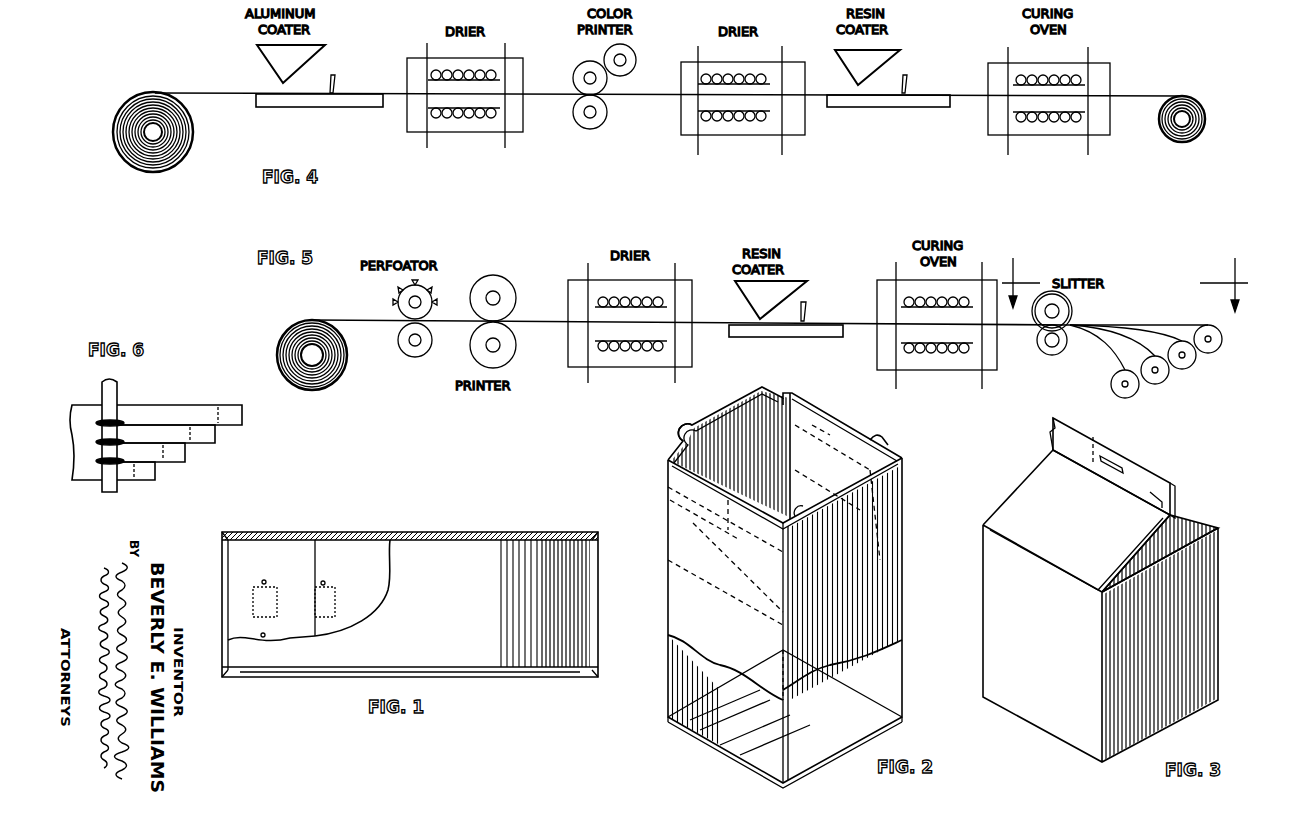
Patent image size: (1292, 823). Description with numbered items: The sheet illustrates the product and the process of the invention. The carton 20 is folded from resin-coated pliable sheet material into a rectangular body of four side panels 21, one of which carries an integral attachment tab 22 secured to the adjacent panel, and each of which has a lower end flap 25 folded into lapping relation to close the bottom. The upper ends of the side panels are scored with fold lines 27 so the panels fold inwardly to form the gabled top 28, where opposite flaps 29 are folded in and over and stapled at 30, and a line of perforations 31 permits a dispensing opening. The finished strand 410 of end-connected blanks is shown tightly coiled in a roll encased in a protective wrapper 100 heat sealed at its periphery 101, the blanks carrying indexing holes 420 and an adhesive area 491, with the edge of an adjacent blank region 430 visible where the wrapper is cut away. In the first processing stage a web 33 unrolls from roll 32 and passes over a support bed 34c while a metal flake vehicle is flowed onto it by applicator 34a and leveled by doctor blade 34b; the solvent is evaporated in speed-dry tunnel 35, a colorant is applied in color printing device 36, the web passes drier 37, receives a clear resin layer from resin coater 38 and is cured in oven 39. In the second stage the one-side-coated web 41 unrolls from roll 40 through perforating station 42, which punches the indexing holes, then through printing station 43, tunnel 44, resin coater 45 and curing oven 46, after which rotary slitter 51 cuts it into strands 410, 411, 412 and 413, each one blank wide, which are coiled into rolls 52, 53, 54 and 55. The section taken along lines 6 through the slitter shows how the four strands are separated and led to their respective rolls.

In FIG. 2, the carton 20 is at (661, 598).
In FIG. 3, the carton 20 is at (983, 594).
In FIG. 2, the side panels 21 is at (664, 656).
In FIG. 3, the side panels 21 is at (1210, 650).
In FIG. 2, the attachment tab 22 is at (805, 686).
In FIG. 2, the lower end flaps 25 is at (720, 744).
In FIG. 2, the fold lines 27 is at (690, 540).
In FIG. 3, the fold lines 27 is at (1076, 572).
In FIG. 3, the gabled top 28 is at (1201, 518).
In FIG. 2, the flaps 29 is at (692, 426).
In FIG. 3, the flaps 29 is at (1148, 493).
In FIG. 3, the staple 30 is at (1117, 464).
In FIG. 3, the line of perforations 31 is at (1093, 435).
In FIG. 4, the roll of paperboard 32 is at (143, 159).
In FIG. 4, the web 33 is at (205, 92).
In FIG. 4, the metal flake vehicle applicator 34a is at (257, 53).
In FIG. 4, the doctor blade 34b is at (336, 78).
In FIG. 4, the support bed 34c is at (305, 106).
In FIG. 4, the speed-dry tunnel 35 is at (525, 62).
In FIG. 4, the color printing device 36 is at (570, 123).
In FIG. 4, the drier 37 is at (795, 65).
In FIG. 4, the resin coater 38 is at (905, 62).
In FIG. 4, the temperature controlled oven 39 is at (1111, 65).
In FIG. 4, the roll 40 is at (1208, 120).
In FIG. 5, the roll 40 is at (340, 358).
In FIG. 5, the web 41 is at (354, 322).
In FIG. 5, the perforating station 42 is at (400, 293).
In FIG. 5, the printing station 43 is at (495, 278).
In FIG. 5, the tunnel 44 is at (577, 280).
In FIG. 5, the resin coater 45 is at (810, 283).
In FIG. 5, the curing oven 46 is at (878, 300).
In FIG. 5, the rotary slitter 51 is at (1072, 311).
In FIG. 6, the rotary slitter 51 is at (100, 385).
In FIG. 5, the roll 52 is at (1222, 339).
In FIG. 6, the roll 52 is at (242, 425).
In FIG. 5, the roll 53 is at (1193, 359).
In FIG. 6, the roll 53 is at (215, 443).
In FIG. 5, the roll 54 is at (1163, 381).
In FIG. 6, the roll 54 is at (185, 462).
In FIG. 5, the roll 55 is at (1111, 389).
In FIG. 6, the roll 55 is at (155, 480).
In FIG. 5, the section lines 6— 6 is at (1125, 276).
In FIG. 1, the protective wrapper 100 is at (445, 543).
In FIG. 1, the periphery 101 is at (593, 527).
In FIG. 5, the strand of carton blanks 410 is at (1180, 325).
In FIG. 6, the strand of carton blanks 410 is at (223, 405).
In FIG. 1, the strand of carton blanks 410 is at (289, 540).
In FIG. 5, the strand of carton blanks 411 is at (1168, 323).
In FIG. 6, the strand of carton blanks 411 is at (190, 430).
In FIG. 5, the strand of carton blanks 412 is at (1126, 356).
In FIG. 6, the strand of carton blanks 412 is at (153, 445).
In FIG. 5, the strand of carton blanks 413 is at (1115, 344).
In FIG. 6, the strand of carton blanks 413 is at (132, 475).
In FIG. 1, the indexing holes 420 is at (326, 583).
In FIG. 1, the web strip 430 is at (382, 541).
In FIG. 1, the adhesive area 491 is at (328, 613).